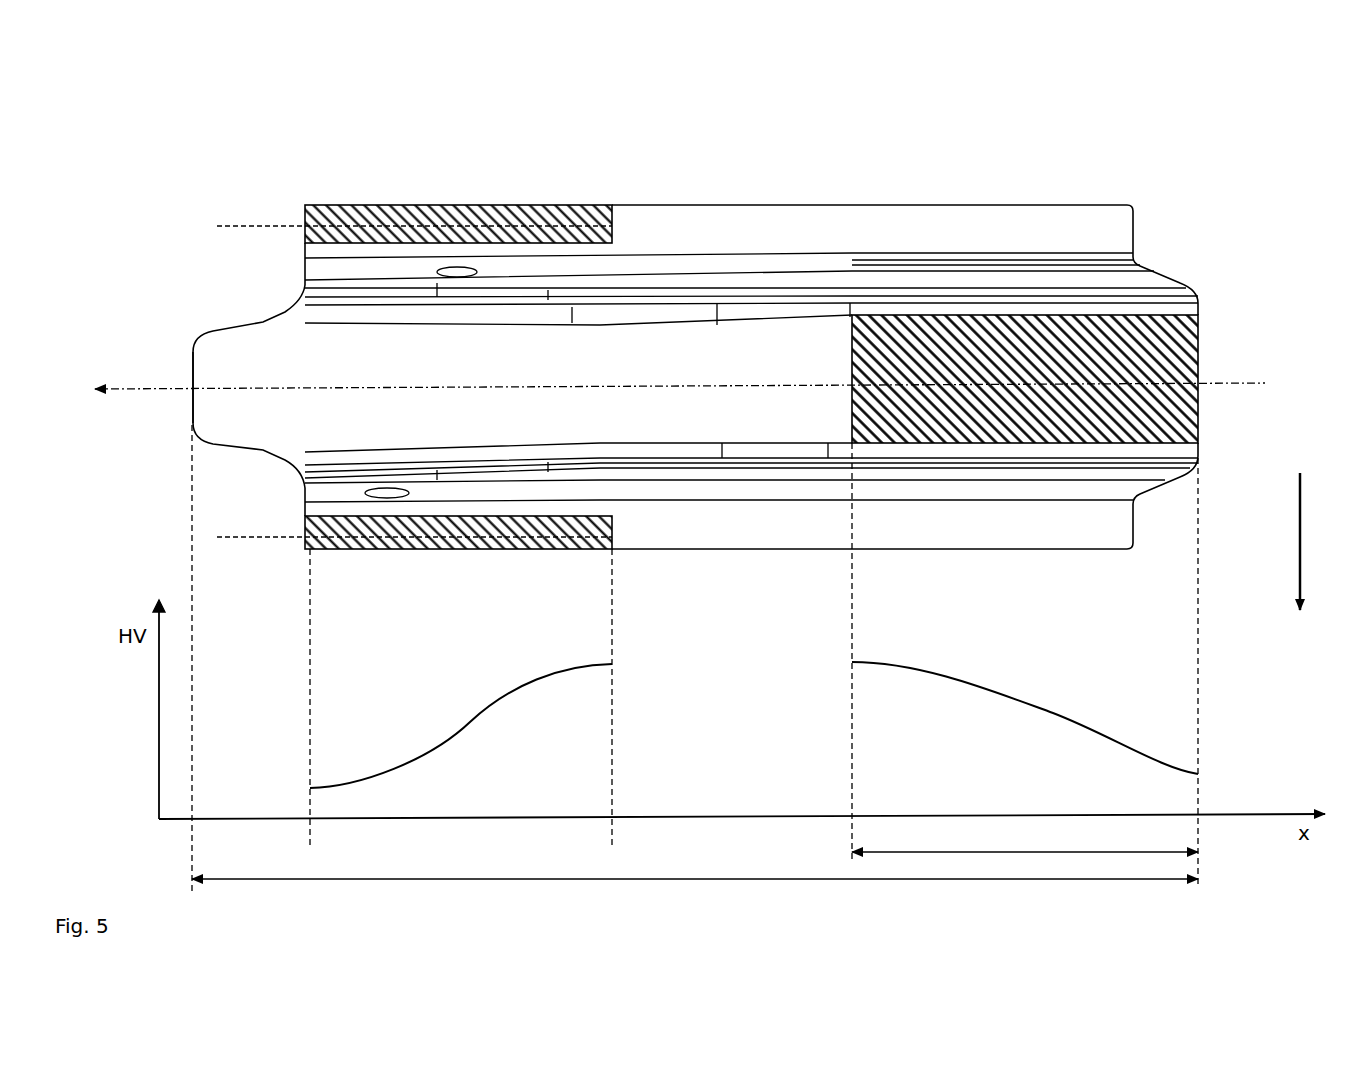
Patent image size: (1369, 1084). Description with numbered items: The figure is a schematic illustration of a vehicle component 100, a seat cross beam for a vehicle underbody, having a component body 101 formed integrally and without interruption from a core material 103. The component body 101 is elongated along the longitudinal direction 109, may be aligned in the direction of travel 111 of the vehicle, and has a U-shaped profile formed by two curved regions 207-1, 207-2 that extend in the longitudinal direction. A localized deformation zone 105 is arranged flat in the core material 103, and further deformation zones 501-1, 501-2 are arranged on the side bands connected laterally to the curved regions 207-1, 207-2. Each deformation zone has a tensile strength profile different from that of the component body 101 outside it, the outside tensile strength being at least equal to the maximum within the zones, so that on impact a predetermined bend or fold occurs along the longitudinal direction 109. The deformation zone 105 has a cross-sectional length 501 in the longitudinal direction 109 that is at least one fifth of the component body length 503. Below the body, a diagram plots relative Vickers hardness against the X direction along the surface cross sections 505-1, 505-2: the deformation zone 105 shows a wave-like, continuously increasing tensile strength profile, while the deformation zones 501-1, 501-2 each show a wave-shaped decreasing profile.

The vehicle component 100 is at (190, 142).
The component body 101 is at (765, 227).
The core material 103 is at (300, 340).
The deformation zone 105 is at (965, 320).
The longitudinal direction 109 is at (708, 373).
The direction of travel 111 is at (1326, 541).
The curved region 207-1 is at (1012, 281).
The curved region 207-2 is at (790, 475).
The deformation zone 501-1 is at (335, 215).
The deformation zone 501-2 is at (338, 543).
The surface cross section 505-1 is at (414, 215).
The surface cross section 505-2 is at (414, 524).
The cross-sectional length 501 is at (1025, 841).
The component body length 503 is at (695, 869).